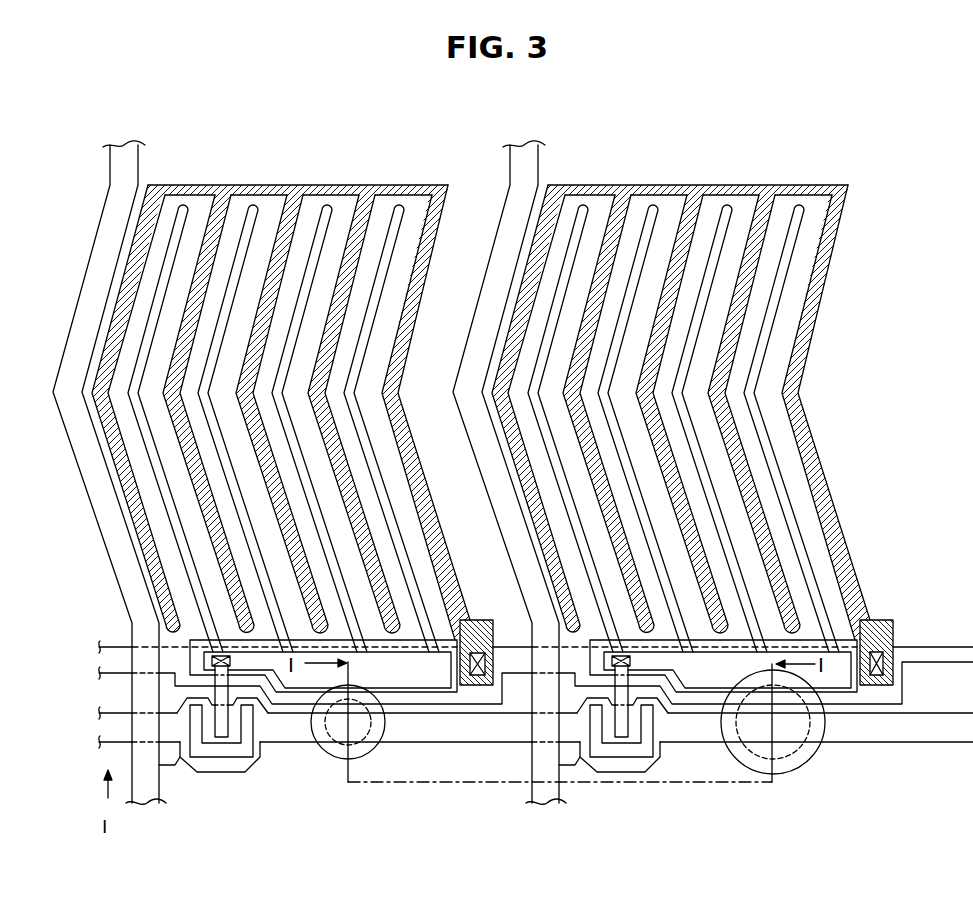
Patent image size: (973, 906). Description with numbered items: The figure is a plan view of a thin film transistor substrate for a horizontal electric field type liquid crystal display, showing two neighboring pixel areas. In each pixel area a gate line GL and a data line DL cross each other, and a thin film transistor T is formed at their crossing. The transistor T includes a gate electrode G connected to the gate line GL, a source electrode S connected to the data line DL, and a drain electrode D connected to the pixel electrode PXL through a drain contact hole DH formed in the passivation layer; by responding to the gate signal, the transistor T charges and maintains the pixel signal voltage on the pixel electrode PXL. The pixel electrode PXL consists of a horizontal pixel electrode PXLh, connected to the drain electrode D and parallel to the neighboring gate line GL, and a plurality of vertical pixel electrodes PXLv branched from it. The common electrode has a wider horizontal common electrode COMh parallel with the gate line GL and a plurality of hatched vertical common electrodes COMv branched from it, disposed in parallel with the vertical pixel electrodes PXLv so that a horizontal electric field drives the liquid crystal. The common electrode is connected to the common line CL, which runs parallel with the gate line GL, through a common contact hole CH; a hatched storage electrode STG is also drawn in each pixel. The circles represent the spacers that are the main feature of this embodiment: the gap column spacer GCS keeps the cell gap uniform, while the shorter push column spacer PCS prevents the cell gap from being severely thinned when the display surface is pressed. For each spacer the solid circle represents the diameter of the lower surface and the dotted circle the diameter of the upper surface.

The data line DL is at (132, 755).
The drain contact hole DH is at (212, 660).
The source electrode S is at (203, 752).
The drain electrode D is at (218, 733).
The gate electrode G is at (232, 766).
The thin film transistor T is at (213, 757).
The gate line GL is at (273, 730).
The horizontal common electrode COMh is at (300, 702).
The vertical common electrode COMv is at (822, 319).
The push column spacer PCS is at (342, 761).
The horizontal pixel electrode PXLh is at (398, 672).
The vertical pixel electrode PXLv is at (430, 605).
The pixel electrode PXL is at (299, 525).
The storage electrode STG is at (457, 692).
The common contact hole CH is at (878, 655).
The common line CL is at (917, 651).
The gap column spacer GCS is at (812, 758).